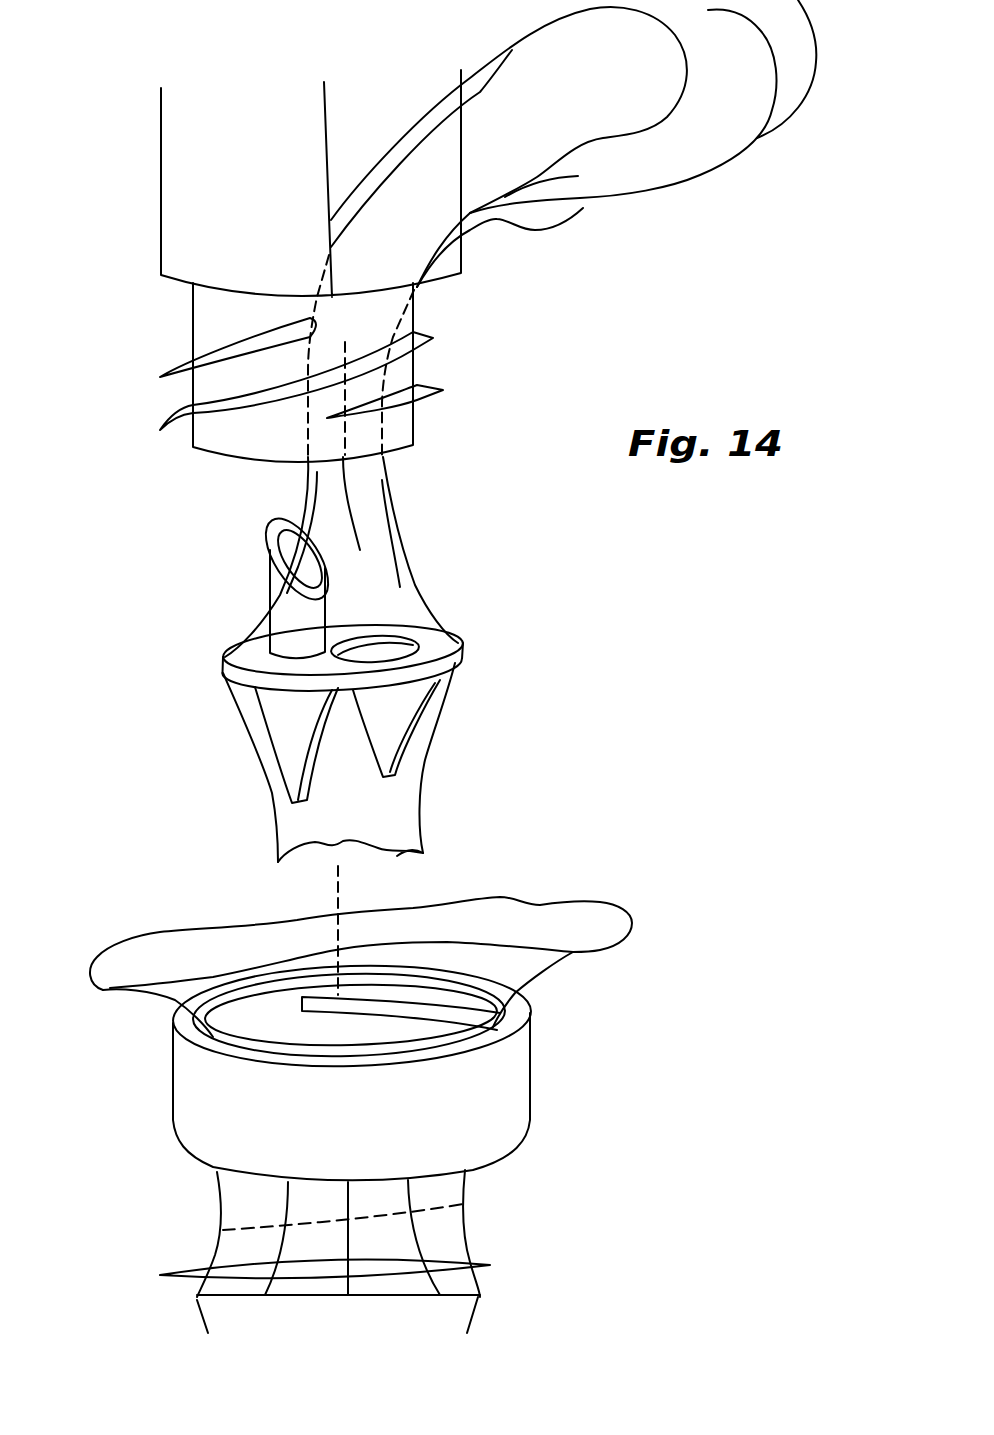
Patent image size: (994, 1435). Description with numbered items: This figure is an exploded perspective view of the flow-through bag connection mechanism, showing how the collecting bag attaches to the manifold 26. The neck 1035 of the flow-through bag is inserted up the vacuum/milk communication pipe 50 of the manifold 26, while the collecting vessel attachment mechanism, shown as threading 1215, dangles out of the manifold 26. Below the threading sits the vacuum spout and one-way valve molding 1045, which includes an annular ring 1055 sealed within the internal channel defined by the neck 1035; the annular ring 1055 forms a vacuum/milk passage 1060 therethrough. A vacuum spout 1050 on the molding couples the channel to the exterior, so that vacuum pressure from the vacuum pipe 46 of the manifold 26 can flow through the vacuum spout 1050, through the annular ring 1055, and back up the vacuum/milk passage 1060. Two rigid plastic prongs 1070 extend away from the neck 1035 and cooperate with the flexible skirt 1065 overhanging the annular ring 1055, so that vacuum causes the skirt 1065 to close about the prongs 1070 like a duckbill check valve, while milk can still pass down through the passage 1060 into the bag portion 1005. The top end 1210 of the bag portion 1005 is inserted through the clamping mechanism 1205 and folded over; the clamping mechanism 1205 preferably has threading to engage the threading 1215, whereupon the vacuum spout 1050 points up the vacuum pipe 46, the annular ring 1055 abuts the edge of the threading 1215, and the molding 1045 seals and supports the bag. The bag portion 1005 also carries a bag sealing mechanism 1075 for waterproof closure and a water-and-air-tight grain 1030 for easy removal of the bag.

The manifold 26 is at (262, 183).
The vacuum pipe 46 is at (257, 186).
The vacuum/milk communication pipe 50 is at (573, 154).
The neck 1035 is at (610, 198).
The threading 1215 is at (157, 470).
The vacuum spout and one-way valve molding 1045 is at (345, 726).
The vacuum spout 1050 is at (280, 562).
The annular ring 1055 is at (385, 613).
The vacuum/milk passage 1060 is at (382, 640).
The flexible skirt 1065 is at (420, 806).
The rigid plastic prongs 1070 is at (278, 717).
The top end 1210 is at (632, 935).
The clamping mechanism 1205 is at (532, 1072).
The water-and-air-tight grain 1030 is at (463, 1205).
The bag portion 1005 is at (329, 1251).
The bag sealing mechanism 1075 is at (490, 1265).